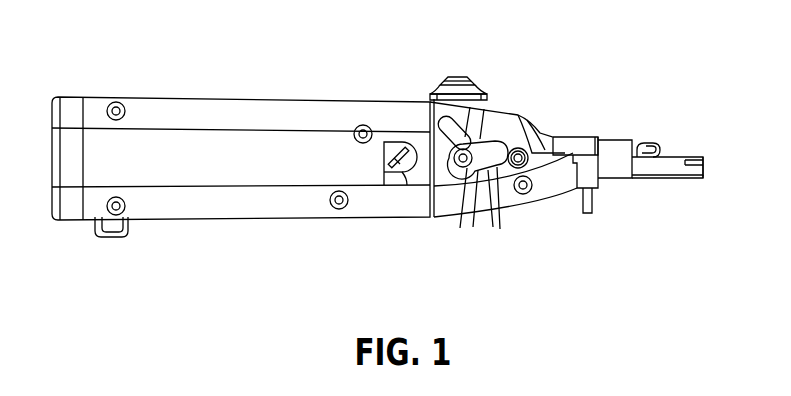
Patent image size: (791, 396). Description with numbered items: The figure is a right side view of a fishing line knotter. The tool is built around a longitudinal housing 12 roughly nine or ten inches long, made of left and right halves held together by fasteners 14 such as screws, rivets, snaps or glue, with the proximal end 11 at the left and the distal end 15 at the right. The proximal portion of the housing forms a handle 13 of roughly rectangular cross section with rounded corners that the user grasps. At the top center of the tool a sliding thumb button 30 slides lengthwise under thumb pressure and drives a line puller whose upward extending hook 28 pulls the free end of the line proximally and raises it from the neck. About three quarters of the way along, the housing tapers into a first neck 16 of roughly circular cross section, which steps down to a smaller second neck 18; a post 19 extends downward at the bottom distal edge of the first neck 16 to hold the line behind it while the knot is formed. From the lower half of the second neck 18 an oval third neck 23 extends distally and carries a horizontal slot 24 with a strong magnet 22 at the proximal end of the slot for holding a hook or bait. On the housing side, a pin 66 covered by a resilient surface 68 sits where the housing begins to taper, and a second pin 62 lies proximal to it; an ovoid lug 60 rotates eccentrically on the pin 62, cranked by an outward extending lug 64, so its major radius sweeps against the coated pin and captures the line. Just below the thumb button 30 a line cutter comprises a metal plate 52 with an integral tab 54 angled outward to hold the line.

The proximal end 11 is at (54, 221).
The longitudinal housing 12 is at (288, 157).
The handle 13 is at (172, 157).
The fasteners 14 is at (116, 197).
The distal end 15 is at (713, 166).
The first neck 16 is at (577, 140).
The second neck 18 is at (612, 156).
The post 19 is at (593, 203).
The magnet 22 is at (668, 158).
The third neck 23 is at (653, 179).
The horizontal slot 24 is at (691, 160).
The hook 28 is at (645, 142).
The sliding thumb button 30 is at (461, 91).
The metal plate 52 is at (386, 178).
The tab 54 is at (403, 173).
The ovoid lug 60 is at (487, 171).
The pin 62 is at (463, 172).
The outward extending lug 64 is at (440, 120).
The pin 66 is at (527, 194).
The resilient surface 68 is at (518, 147).